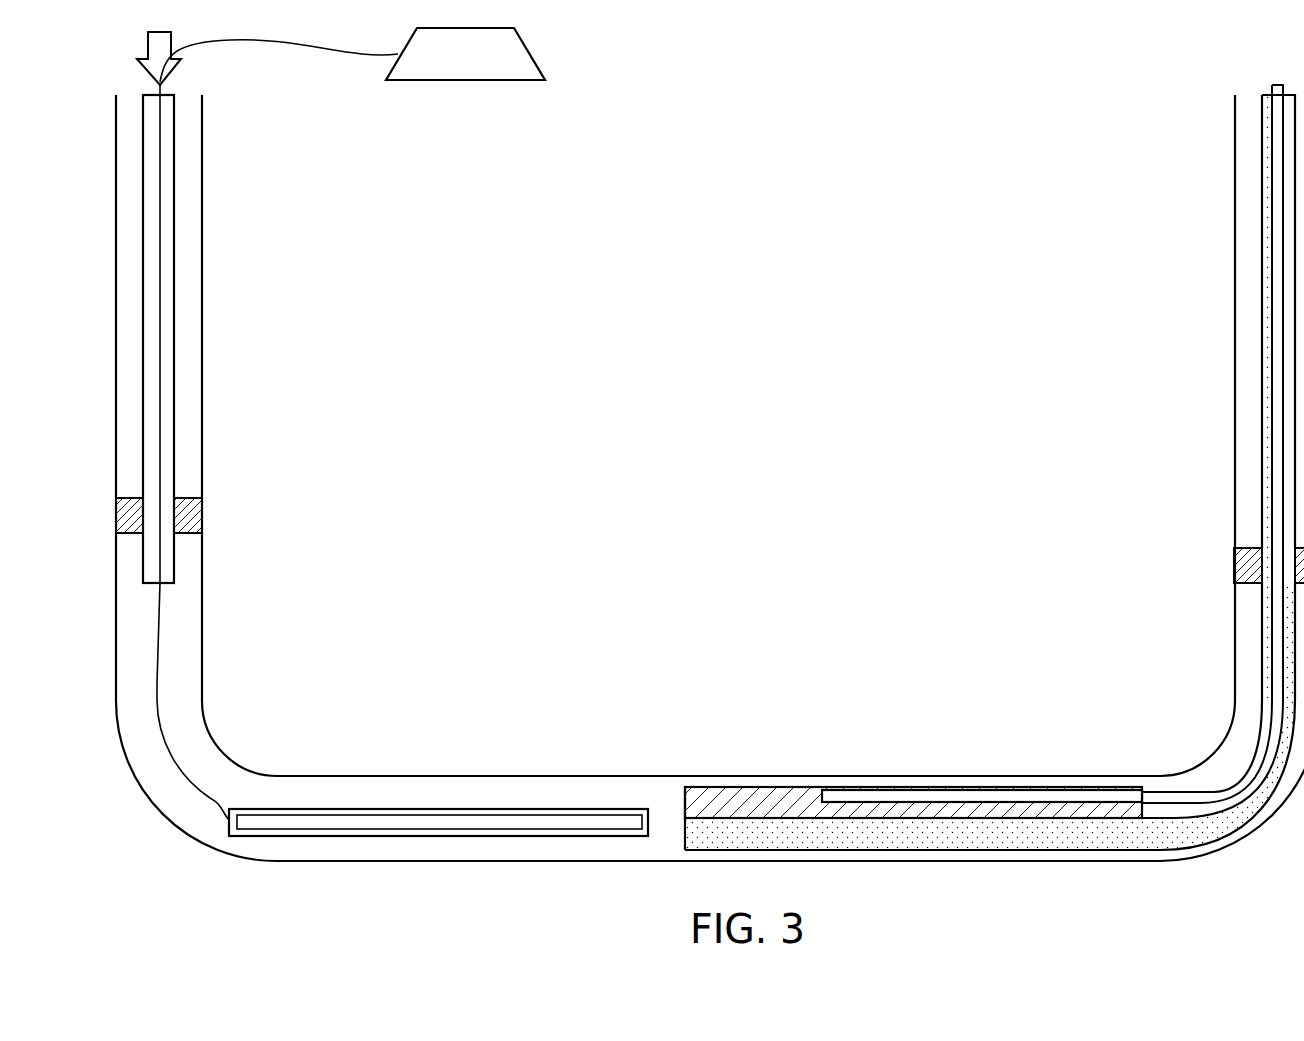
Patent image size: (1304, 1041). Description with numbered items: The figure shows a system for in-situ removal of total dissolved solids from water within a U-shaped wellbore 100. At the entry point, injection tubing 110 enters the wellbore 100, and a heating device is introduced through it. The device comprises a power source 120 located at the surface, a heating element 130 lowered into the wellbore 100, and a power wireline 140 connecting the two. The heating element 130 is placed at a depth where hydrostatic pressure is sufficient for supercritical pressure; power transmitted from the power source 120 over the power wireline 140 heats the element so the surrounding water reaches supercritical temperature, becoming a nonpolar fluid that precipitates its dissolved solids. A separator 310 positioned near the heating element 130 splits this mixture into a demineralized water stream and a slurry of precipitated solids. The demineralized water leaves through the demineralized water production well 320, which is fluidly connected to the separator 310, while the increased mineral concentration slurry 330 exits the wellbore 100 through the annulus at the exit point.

The wellbore 100 is at (203, 391).
The injection tubing 110 is at (177, 212).
The power source 120 is at (530, 58).
The heating element 130 is at (478, 810).
The power wireline 140 is at (157, 683).
The separator 310 is at (740, 797).
The demineralized water production well 320 is at (940, 797).
The increased mineral concentration slurry 330 is at (975, 837).